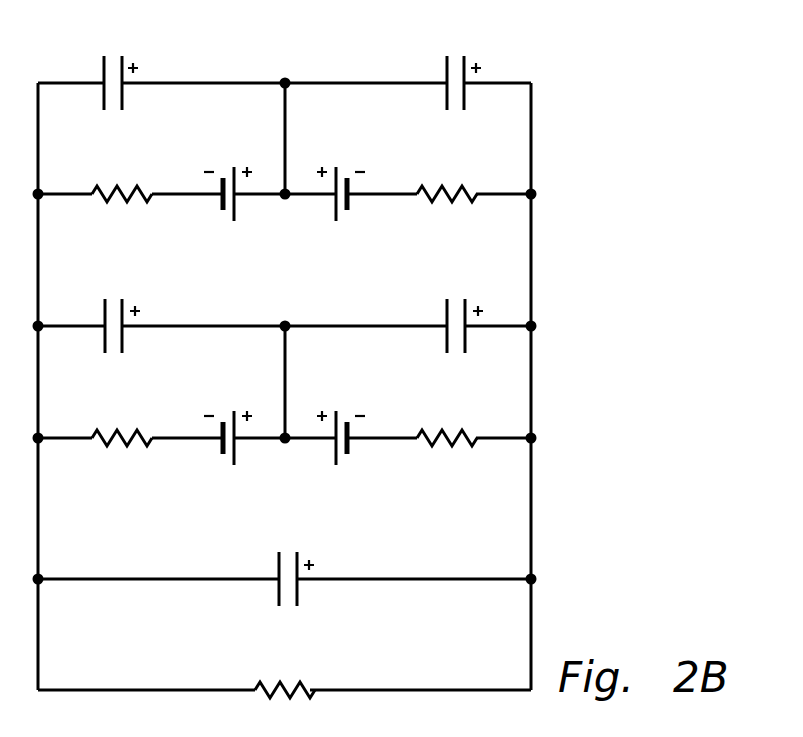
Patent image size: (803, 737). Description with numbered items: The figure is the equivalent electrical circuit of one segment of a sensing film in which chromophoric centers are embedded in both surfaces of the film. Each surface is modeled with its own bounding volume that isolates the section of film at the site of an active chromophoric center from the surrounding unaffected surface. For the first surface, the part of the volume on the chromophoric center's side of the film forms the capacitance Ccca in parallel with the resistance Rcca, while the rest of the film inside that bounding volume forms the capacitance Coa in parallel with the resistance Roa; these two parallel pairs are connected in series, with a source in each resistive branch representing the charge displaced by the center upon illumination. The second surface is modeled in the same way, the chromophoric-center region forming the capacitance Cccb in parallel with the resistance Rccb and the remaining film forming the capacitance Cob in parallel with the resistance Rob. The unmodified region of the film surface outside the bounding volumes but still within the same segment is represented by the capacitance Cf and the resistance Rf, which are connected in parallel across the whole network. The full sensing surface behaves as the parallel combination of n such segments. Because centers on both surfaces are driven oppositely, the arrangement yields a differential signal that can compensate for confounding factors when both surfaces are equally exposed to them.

The chromophoric-center capacitance of side a Ccca is at (51, 6).
The chromophoric-center resistance of side a Rcca is at (123, 124).
The remaining-film capacitance of side a Coa is at (412, 6).
The remaining-film resistance of side a Roa is at (443, 124).
The remaining-film capacitance of side b Cob is at (80, 240).
The remaining-film resistance of side b Rob is at (123, 369).
The chromophoric-center capacitance of side b Cccb is at (417, 248).
The chromophoric-center resistance of side b Rccb is at (446, 367).
The unmodified-film capacitance Cf is at (264, 503).
The unmodified-film resistance Rf is at (279, 623).